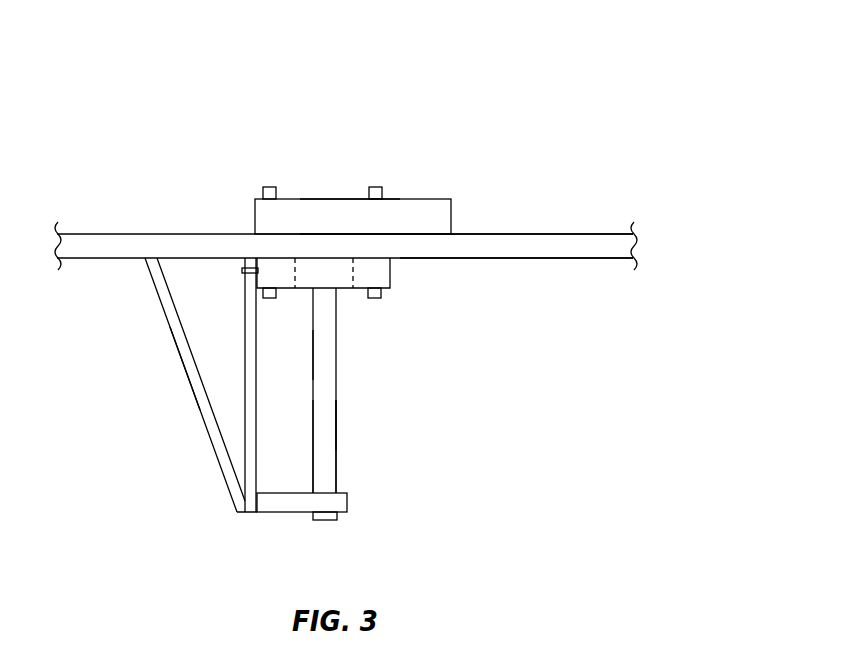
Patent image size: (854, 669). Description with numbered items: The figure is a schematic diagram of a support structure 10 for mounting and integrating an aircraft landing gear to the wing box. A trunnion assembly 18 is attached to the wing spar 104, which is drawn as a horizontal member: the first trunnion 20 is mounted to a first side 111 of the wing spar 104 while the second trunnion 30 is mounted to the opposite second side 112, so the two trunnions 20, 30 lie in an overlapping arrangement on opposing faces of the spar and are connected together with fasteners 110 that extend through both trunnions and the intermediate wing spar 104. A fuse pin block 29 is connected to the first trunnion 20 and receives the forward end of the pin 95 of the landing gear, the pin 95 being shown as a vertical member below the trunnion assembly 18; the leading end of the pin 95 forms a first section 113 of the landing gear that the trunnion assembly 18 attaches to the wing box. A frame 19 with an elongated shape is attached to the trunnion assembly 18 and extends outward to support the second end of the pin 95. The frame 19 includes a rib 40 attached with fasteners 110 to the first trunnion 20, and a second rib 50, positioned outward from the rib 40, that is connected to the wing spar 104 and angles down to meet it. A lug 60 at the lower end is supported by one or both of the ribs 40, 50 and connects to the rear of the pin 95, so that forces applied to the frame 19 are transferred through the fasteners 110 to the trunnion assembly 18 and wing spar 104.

The support structure 10 is at (410, 405).
The trunnion assembly 18 is at (283, 145).
The frame 19 is at (202, 447).
The first trunnion 20 is at (370, 268).
The fuse pin block 29 is at (333, 278).
The second trunnion 30 is at (408, 217).
The rib 40 is at (250, 393).
The second rib 50 is at (188, 360).
The lug 60 is at (292, 500).
The pin 95 is at (325, 465).
The wing spar 104 is at (598, 245).
The fasteners 110 is at (265, 190).
The first side 111 is at (555, 258).
The second side 112 is at (562, 233).
The first section 113 is at (343, 350).